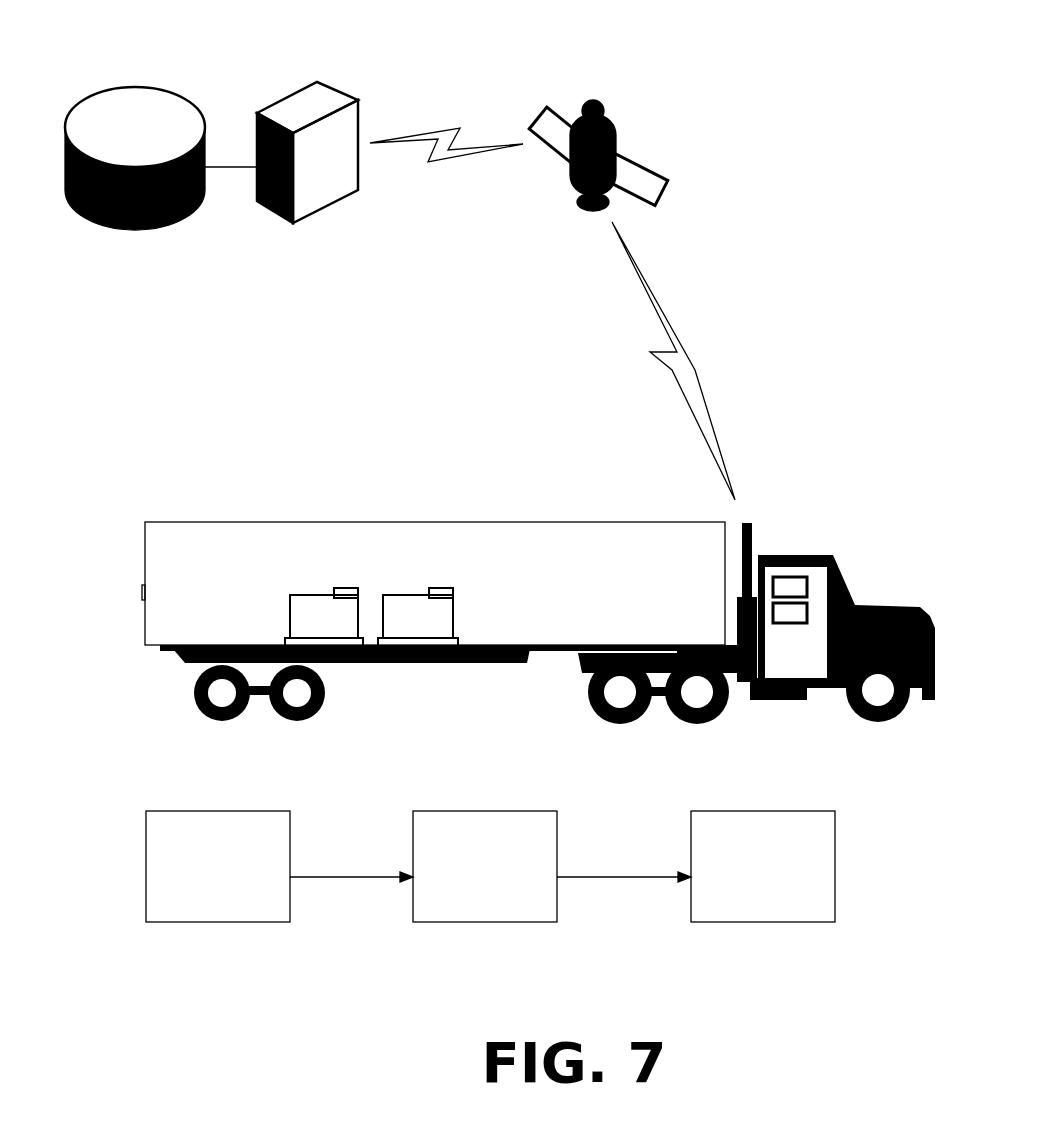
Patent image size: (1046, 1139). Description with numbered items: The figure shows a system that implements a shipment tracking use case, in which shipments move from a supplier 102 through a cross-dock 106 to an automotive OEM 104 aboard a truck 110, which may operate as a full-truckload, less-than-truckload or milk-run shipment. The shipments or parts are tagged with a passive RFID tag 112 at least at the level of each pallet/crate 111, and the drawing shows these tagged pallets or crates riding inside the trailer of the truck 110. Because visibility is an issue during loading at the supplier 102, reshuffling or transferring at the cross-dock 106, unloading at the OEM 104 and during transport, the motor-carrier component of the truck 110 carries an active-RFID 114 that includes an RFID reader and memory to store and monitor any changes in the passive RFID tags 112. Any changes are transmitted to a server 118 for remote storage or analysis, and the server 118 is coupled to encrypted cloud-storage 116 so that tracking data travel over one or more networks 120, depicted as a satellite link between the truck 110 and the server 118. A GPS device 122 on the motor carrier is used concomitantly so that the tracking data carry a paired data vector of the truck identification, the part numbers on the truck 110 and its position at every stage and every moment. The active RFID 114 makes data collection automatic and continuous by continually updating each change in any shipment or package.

The supplier 102 is at (218, 866).
The automotive OEM 104 is at (763, 866).
The cross-dock 106 is at (485, 866).
The truck 110 is at (770, 470).
The pallet/crate 111 is at (334, 622).
The passive RFID tag 112 is at (348, 597).
The active-RFID 114 is at (790, 585).
The encrypted cloud-storage 116 is at (140, 110).
The server 118 is at (317, 100).
The network 120 is at (666, 112).
The GPS device 122 is at (790, 620).